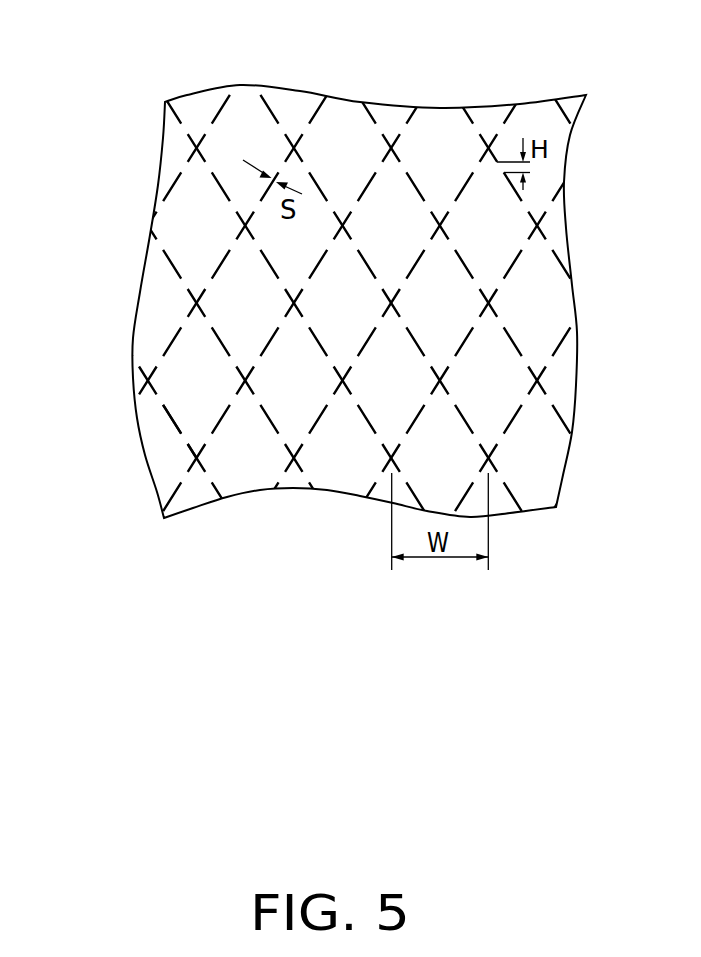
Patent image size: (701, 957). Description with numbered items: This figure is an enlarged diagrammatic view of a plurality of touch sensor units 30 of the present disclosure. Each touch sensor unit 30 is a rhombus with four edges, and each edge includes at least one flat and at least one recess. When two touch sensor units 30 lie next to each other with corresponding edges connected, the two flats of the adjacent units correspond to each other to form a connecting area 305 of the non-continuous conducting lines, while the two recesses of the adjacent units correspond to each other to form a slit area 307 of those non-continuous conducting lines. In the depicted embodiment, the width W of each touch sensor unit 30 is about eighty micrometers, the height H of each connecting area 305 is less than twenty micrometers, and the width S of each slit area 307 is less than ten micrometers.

The touch sensor unit 30 is at (385, 210).
The connecting area 305 is at (180, 444).
The slit area 307 is at (166, 424).